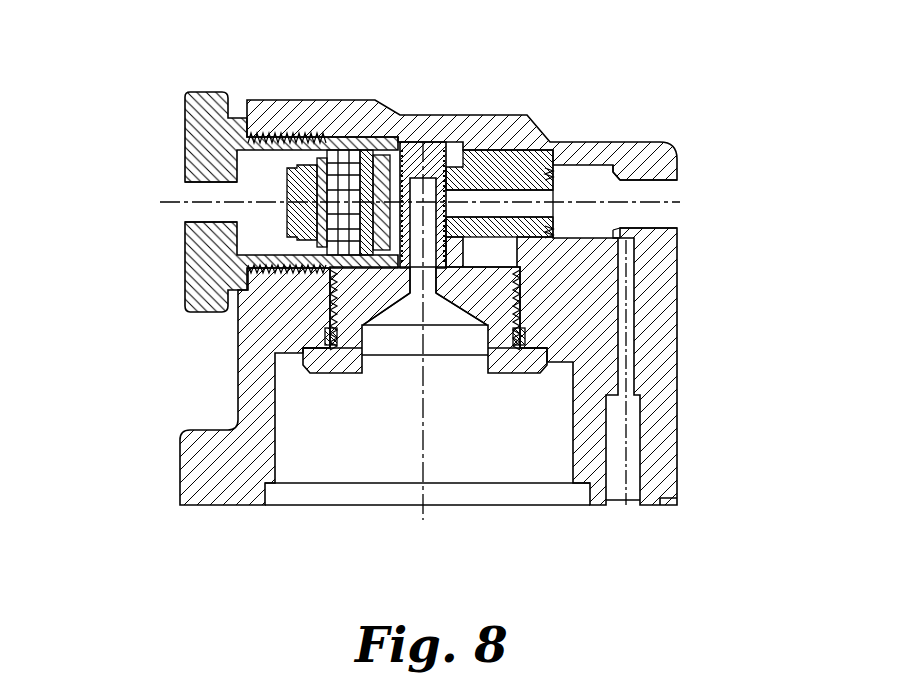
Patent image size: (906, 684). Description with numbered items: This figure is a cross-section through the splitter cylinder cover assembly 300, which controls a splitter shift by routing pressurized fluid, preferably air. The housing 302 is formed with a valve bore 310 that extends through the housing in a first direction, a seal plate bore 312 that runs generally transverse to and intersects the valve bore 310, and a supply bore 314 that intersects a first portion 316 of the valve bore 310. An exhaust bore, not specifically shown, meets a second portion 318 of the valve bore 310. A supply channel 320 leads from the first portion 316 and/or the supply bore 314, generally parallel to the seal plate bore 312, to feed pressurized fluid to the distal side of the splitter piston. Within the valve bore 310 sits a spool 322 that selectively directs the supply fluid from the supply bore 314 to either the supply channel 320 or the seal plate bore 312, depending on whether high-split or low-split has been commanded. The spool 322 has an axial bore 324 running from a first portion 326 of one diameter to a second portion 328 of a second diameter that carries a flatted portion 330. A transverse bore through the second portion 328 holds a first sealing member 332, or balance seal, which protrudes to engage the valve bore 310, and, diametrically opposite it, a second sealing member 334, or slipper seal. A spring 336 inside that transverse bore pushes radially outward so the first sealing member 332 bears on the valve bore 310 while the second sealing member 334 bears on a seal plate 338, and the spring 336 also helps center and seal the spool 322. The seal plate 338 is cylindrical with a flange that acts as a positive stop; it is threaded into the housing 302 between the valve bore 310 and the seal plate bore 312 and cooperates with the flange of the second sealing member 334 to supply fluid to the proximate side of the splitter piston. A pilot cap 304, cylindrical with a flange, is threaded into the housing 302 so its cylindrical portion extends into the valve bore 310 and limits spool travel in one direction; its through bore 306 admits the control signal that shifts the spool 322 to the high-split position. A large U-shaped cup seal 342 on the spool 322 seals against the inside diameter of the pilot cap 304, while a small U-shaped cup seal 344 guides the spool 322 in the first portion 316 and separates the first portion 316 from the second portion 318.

The splitter cylinder cover assembly 300 is at (370, 95).
The housing 302 is at (680, 410).
The pilot cap 304 is at (188, 108).
The through bore 306 is at (182, 187).
The valve bore 310 is at (485, 160).
The seal plate bore 312 is at (447, 452).
The supply bore 314 is at (668, 188).
The first portion of valve bore 316 is at (580, 187).
The second portion of valve bore 318 is at (505, 292).
The supply channel 320 is at (630, 458).
The spool 322 is at (513, 162).
The axial bore 324 is at (552, 210).
The first portion of spool 326 is at (527, 150).
The second portion of spool 328 is at (455, 145).
The flatted portion 330 is at (487, 258).
The first sealing member 332 is at (413, 143).
The second sealing member 334 is at (405, 290).
The spring 336 is at (240, 312).
The seal plate 338 is at (303, 368).
The cup seal 342 is at (303, 130).
The cup seal 344 is at (540, 262).